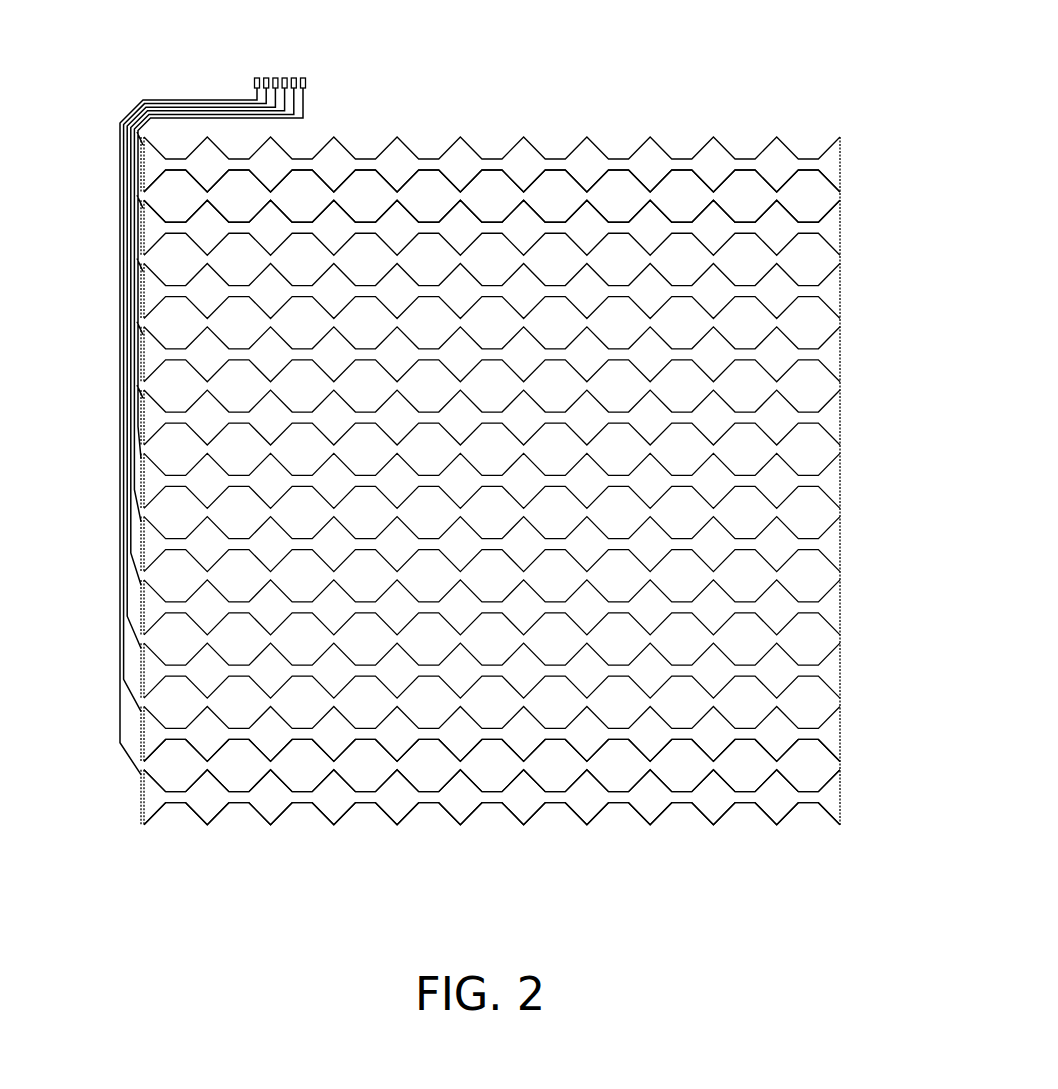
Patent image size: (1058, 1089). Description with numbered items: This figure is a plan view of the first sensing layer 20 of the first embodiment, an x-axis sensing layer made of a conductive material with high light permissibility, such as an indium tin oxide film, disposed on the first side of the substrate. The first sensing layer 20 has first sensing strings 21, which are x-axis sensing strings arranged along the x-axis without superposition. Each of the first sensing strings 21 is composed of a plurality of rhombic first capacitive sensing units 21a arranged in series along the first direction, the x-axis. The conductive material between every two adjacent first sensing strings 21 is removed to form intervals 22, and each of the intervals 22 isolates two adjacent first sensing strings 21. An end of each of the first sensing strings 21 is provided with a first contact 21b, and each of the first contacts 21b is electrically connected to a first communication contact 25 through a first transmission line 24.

The first sensing layer 20 is at (488, 451).
The first sensing string 21 is at (842, 161).
The first capacitive sensing unit 21a is at (217, 808).
The first contact 21b is at (139, 790).
The interval 22 is at (825, 196).
The first transmission line 24 is at (121, 711).
The first communication contact 25 is at (255, 81).